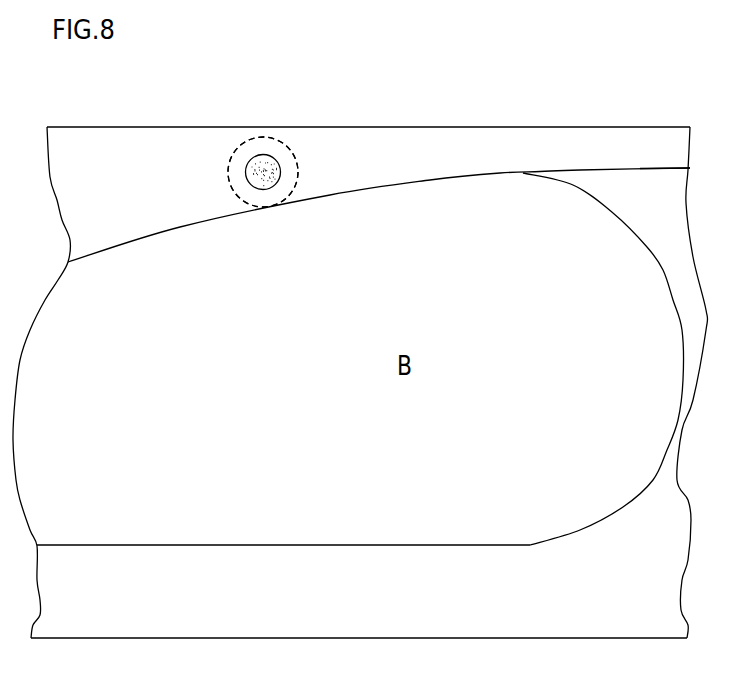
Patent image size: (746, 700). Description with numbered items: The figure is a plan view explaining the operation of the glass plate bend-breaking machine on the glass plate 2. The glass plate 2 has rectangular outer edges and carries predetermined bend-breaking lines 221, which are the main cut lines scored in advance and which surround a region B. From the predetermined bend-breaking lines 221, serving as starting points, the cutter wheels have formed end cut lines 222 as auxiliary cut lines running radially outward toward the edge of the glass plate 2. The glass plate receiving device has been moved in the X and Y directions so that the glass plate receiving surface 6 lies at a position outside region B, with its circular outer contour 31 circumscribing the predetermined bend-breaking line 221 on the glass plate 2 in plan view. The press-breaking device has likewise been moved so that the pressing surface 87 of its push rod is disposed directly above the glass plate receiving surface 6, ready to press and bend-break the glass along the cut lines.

The glass plate 2 is at (543, 227).
The predetermined bend-breaking line 221 is at (147, 236).
The end cut line 222 is at (658, 167).
The circular outer contour 31 is at (230, 162).
The pressing surface 87 is at (260, 170).
The glass plate receiving surface 6 is at (282, 148).